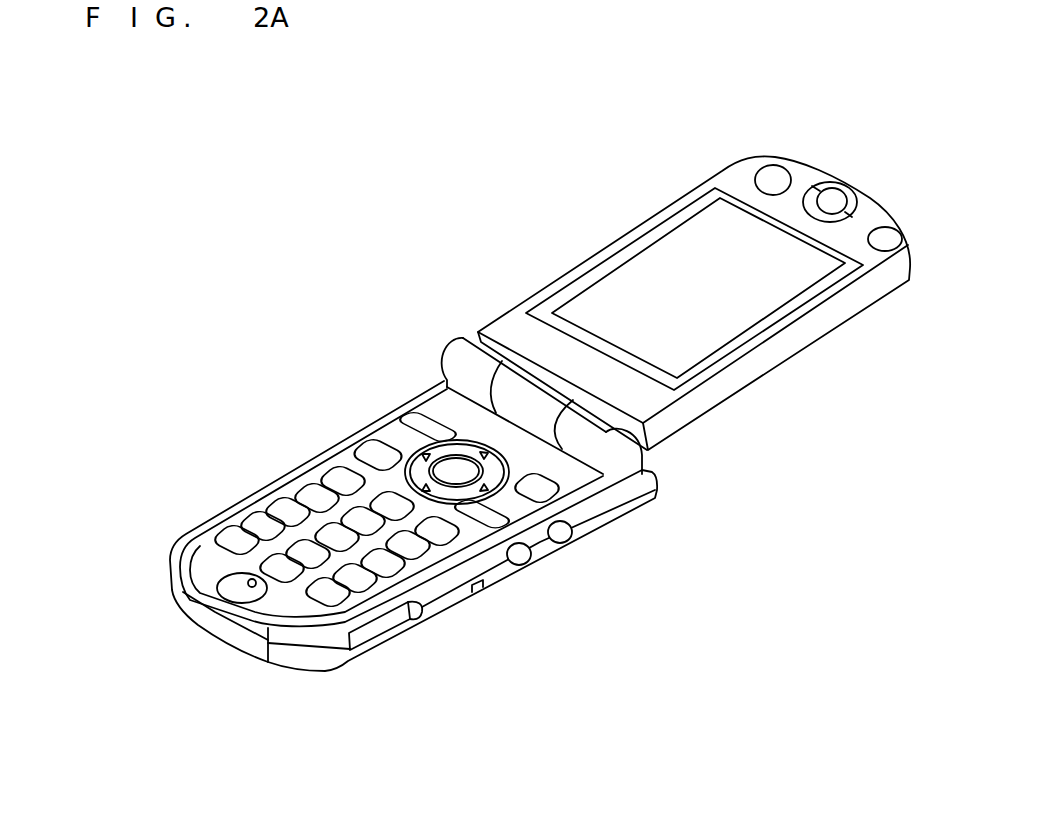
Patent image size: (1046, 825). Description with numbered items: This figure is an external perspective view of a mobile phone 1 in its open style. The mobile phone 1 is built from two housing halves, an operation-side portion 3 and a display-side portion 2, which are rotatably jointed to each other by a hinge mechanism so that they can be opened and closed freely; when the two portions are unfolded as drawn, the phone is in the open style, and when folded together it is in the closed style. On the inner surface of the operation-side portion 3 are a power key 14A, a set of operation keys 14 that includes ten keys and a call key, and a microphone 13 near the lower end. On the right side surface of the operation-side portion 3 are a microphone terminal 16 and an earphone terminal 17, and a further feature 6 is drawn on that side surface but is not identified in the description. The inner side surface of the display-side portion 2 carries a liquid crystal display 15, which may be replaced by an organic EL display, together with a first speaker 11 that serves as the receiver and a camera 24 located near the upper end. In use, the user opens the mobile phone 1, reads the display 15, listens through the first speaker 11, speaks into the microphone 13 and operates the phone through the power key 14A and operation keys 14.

The mobile phone 1 is at (297, 183).
The display-side portion 2 is at (768, 360).
The operation-side portion 3 is at (610, 513).
The external connector slot 6 is at (404, 636).
The first speaker 11 is at (838, 195).
The microphone 13 is at (248, 583).
The operation keys 14 is at (398, 383).
The power key 14A is at (450, 540).
The liquid crystal display (LCD) 15 is at (643, 267).
The microphone terminal 16 is at (571, 537).
The earphone terminal 17 is at (532, 560).
The camera 24 is at (770, 172).